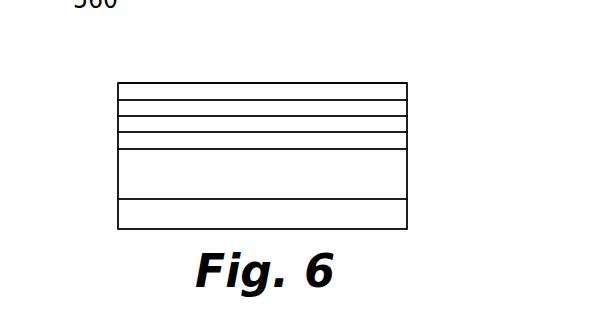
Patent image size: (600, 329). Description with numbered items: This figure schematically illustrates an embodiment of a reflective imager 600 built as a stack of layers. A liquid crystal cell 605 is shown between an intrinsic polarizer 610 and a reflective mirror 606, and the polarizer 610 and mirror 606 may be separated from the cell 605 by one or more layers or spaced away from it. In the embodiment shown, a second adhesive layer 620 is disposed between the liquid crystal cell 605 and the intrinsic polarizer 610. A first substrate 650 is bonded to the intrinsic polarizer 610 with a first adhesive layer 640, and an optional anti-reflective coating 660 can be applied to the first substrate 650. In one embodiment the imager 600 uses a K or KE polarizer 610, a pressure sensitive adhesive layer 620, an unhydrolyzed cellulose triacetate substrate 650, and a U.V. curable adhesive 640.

The reflective imager 600 is at (405, 42).
The anti-reflective coating 660 is at (331, 82).
The first substrate 650 is at (400, 92).
The first adhesive layer 640 is at (400, 108).
The intrinsic polarizer 610 is at (400, 124).
The second adhesive layer 620 is at (398, 142).
The liquid crystal cell 605 is at (398, 183).
The reflective mirror 606 is at (127, 215).